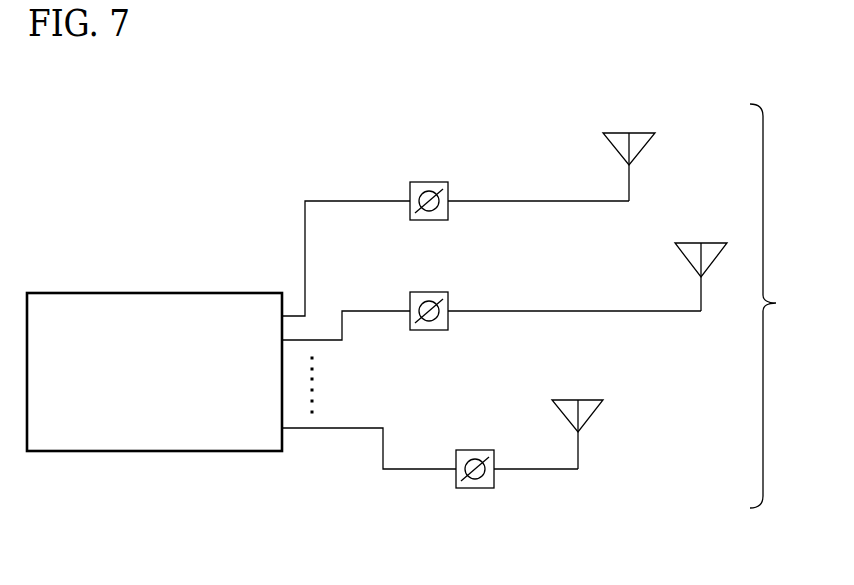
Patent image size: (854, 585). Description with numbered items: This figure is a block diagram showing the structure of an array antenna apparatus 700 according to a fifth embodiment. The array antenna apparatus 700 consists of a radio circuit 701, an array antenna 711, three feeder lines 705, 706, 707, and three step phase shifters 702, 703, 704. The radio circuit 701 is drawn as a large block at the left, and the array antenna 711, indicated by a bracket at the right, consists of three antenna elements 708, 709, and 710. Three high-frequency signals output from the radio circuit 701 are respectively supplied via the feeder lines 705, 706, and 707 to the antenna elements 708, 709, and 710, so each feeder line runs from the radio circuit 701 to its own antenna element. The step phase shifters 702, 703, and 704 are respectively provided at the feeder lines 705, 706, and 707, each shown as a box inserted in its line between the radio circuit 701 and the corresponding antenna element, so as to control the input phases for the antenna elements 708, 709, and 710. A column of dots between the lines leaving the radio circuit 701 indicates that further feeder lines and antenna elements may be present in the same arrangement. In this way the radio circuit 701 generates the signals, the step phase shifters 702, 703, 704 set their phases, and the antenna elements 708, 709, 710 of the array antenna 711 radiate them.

The array antenna apparatus 700 is at (422, 558).
The radio circuit 701 is at (188, 293).
The step phase shifter 702 is at (428, 182).
The step phase shifter 703 is at (428, 292).
The step phase shifter 704 is at (474, 450).
The feeder line 705 is at (528, 203).
The feeder line 706 is at (528, 313).
The feeder line 707 is at (528, 471).
The antenna element 708 is at (639, 133).
The antenna element 709 is at (709, 243).
The antenna element 710 is at (586, 400).
The array antenna 711 is at (783, 306).